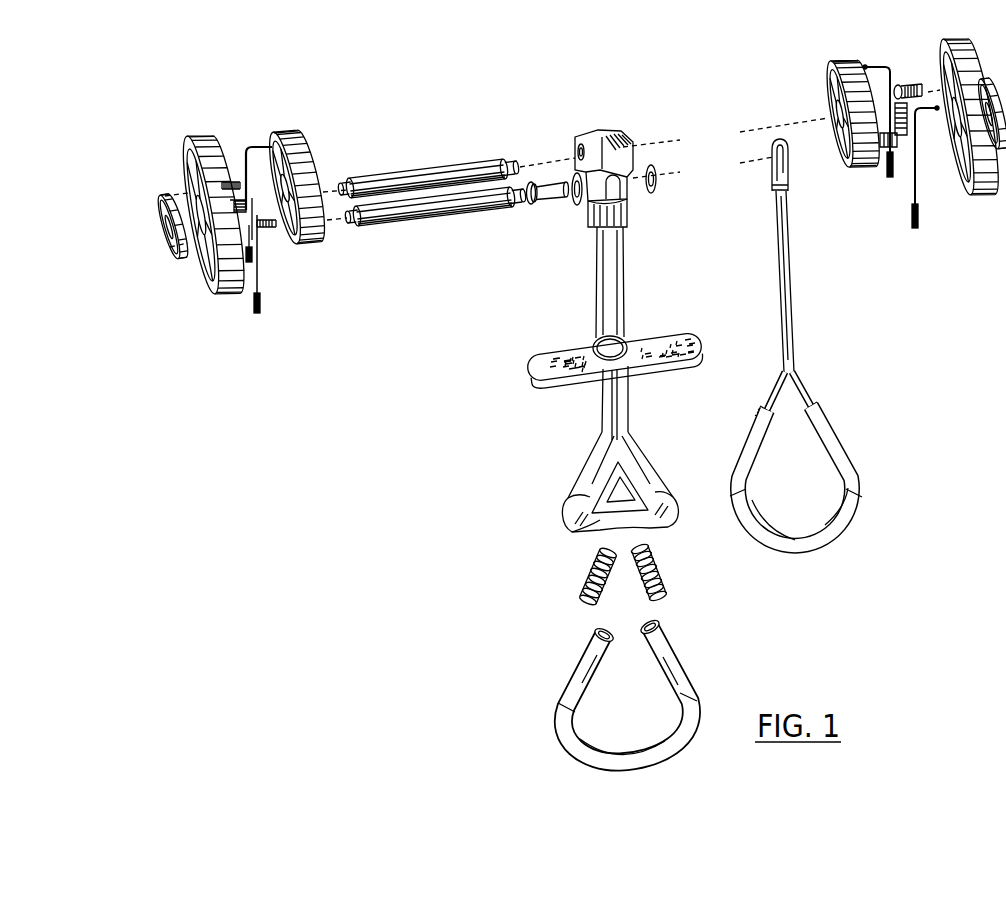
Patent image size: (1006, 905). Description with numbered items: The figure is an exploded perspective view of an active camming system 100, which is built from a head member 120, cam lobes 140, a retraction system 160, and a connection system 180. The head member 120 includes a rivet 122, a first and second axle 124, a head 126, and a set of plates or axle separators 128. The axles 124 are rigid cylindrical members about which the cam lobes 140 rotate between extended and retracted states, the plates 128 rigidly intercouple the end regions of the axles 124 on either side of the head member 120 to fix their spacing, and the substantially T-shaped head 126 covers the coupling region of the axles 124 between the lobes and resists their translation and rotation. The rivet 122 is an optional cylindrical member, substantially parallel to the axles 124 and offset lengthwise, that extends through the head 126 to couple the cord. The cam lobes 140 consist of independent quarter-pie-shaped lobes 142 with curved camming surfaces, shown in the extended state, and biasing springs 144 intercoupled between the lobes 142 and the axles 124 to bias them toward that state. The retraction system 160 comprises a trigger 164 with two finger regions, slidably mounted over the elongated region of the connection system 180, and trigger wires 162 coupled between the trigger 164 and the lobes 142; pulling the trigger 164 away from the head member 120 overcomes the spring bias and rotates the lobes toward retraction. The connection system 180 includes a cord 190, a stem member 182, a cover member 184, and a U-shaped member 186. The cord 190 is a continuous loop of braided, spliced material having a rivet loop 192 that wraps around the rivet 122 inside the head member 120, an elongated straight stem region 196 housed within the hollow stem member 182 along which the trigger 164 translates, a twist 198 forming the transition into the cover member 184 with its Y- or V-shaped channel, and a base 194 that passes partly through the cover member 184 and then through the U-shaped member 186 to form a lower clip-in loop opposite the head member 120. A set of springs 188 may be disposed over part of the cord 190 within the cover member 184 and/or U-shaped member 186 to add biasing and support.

The active camming system 100 is at (260, 78).
The head member 120 is at (590, 122).
The rivet 122 is at (551, 200).
The first and second axle 124 is at (410, 173).
The head 126 is at (611, 143).
The plates or axle separators 128 is at (163, 237).
The cam lobes 140 is at (820, 48).
The lobes 142 is at (842, 58).
The biasing springs 144 is at (912, 88).
The retraction system 160 is at (264, 326).
The trigger wires 162 is at (259, 279).
The trigger 164 is at (556, 352).
The connection system 180 is at (528, 588).
The stem member 182 is at (612, 288).
The cover member 184 is at (656, 468).
The U-shaped member 186 is at (697, 683).
The springs 188 is at (660, 570).
The cord 190 is at (856, 547).
The rivet loop 192 is at (782, 150).
The base 194 is at (854, 495).
The stem region 196 is at (789, 313).
The twist 198 is at (794, 380).